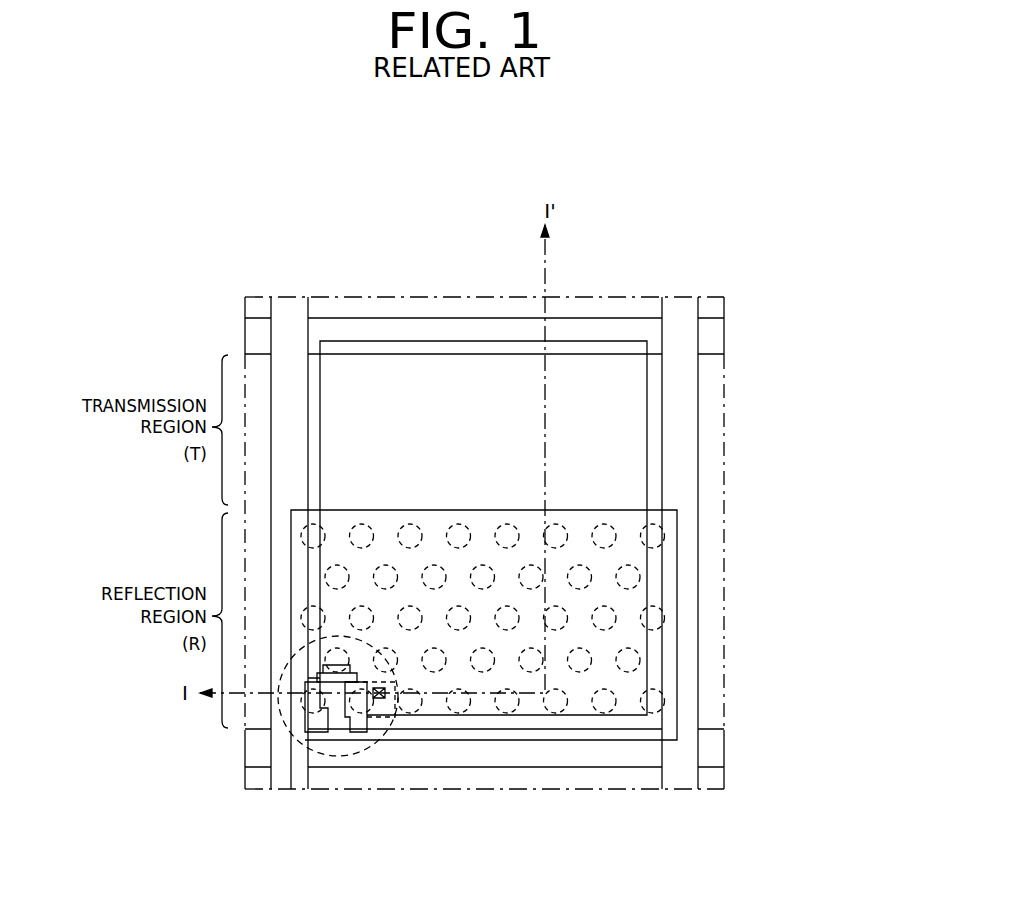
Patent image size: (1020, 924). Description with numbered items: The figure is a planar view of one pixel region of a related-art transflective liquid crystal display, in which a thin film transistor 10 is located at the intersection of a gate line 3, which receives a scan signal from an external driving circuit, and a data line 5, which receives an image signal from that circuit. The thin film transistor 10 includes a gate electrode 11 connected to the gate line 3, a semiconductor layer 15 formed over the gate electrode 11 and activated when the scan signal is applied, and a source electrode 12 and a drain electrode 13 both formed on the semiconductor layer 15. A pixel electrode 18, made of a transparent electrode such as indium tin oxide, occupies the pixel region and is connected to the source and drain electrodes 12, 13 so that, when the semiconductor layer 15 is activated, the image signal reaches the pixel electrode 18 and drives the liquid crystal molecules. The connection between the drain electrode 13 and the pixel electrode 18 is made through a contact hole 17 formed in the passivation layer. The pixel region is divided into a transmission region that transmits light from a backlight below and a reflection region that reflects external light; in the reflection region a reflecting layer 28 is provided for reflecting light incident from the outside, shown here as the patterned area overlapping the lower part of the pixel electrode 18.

The gate line 3 is at (440, 755).
The data line 5 is at (289, 312).
The thin film transistor 10 is at (323, 757).
The gate electrode 11 is at (337, 727).
The source electrode 12 is at (300, 703).
The drain electrode 13 is at (358, 705).
The semiconductor layer 15 is at (302, 728).
The contact hole 17 is at (379, 700).
The pixel electrode 18 is at (647, 464).
The reflecting layer 28 is at (677, 588).